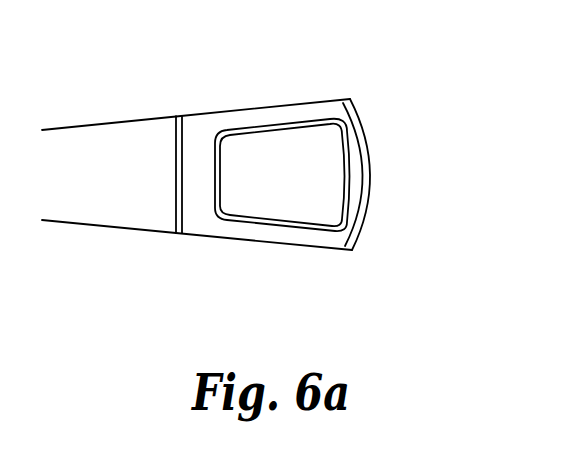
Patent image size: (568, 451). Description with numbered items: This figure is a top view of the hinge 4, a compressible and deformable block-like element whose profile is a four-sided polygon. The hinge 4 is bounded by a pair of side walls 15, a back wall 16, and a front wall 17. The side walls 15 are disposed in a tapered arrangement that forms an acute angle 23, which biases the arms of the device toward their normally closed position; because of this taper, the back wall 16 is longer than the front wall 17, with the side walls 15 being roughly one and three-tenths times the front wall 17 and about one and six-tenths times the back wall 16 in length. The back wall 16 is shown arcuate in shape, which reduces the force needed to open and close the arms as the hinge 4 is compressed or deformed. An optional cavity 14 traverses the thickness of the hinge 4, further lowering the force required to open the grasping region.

The hinge 4 is at (382, 123).
The cavity 14 is at (315, 172).
The side walls 15 is at (255, 112).
The back wall 16 is at (365, 218).
The front wall 17 is at (178, 221).
The acute angle 23 is at (48, 73).